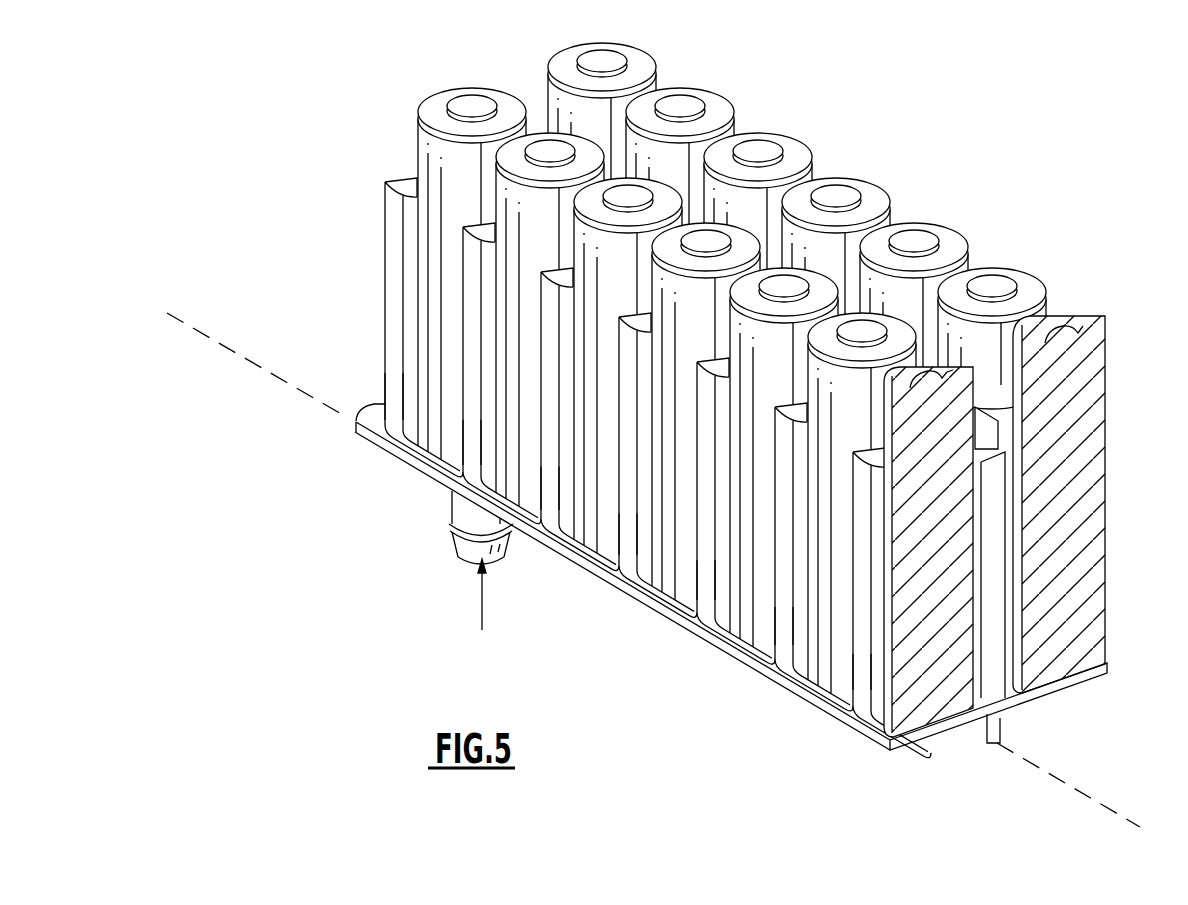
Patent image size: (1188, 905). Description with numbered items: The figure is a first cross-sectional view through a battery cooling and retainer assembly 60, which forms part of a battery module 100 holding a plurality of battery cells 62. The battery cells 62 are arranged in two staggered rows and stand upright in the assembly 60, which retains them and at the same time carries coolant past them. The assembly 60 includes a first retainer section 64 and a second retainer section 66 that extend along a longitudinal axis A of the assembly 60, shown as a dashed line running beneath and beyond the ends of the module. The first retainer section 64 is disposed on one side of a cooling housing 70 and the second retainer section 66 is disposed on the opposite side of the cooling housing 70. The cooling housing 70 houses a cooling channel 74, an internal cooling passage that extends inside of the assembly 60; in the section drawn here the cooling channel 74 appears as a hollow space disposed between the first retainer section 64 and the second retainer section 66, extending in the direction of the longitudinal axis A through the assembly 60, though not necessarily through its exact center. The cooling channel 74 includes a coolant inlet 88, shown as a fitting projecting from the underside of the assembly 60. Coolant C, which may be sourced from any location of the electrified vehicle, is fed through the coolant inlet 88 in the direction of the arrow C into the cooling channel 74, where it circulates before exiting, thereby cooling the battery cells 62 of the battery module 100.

The battery module 100 is at (673, 443).
The battery cooling and retainer assembly 60 is at (379, 176).
The battery cells 62 is at (817, 288).
The first retainer section 64 is at (1108, 305).
The second retainer section 66 is at (553, 598).
The cooling housing 70 is at (997, 433).
The cooling channel 74 is at (1000, 550).
The coolant inlet 88 is at (469, 520).
The longitudinal axis A is at (1106, 804).
The coolant C is at (482, 610).